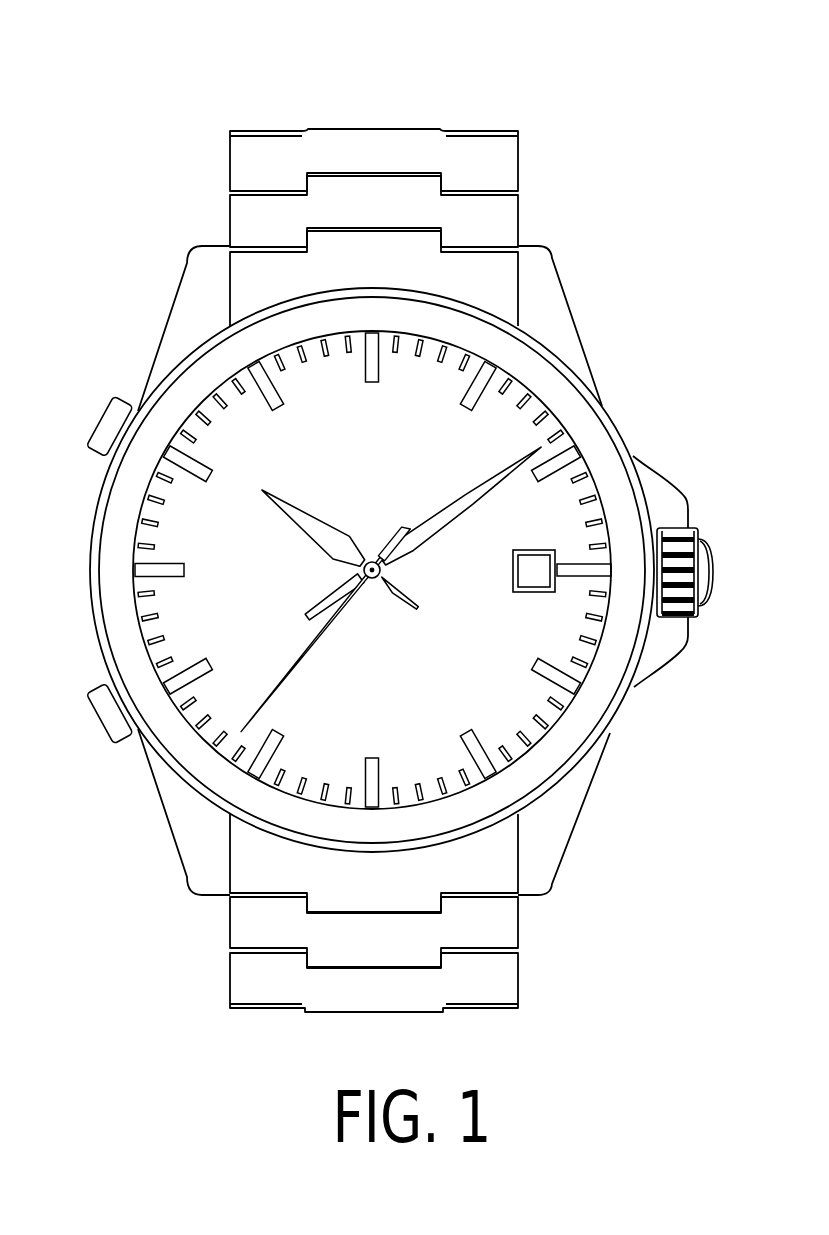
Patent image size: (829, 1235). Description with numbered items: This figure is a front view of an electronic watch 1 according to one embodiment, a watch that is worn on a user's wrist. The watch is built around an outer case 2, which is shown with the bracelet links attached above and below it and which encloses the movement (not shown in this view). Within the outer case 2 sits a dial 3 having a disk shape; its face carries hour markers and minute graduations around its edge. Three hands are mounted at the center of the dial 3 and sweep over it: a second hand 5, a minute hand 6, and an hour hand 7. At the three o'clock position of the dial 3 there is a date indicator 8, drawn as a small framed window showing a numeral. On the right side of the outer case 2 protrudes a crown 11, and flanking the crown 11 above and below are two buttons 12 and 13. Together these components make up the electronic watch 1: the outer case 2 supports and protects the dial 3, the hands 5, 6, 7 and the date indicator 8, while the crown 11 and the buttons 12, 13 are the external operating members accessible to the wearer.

The electronic watch 1 is at (603, 86).
The outer case 2 is at (145, 453).
The dial 3 is at (225, 425).
The second hand 5 is at (293, 677).
The minute hand 6 is at (478, 493).
The hour hand 7 is at (317, 518).
The date indicator 8 is at (530, 585).
The crown 11 is at (713, 573).
The button 12 is at (642, 418).
The button 13 is at (642, 717).